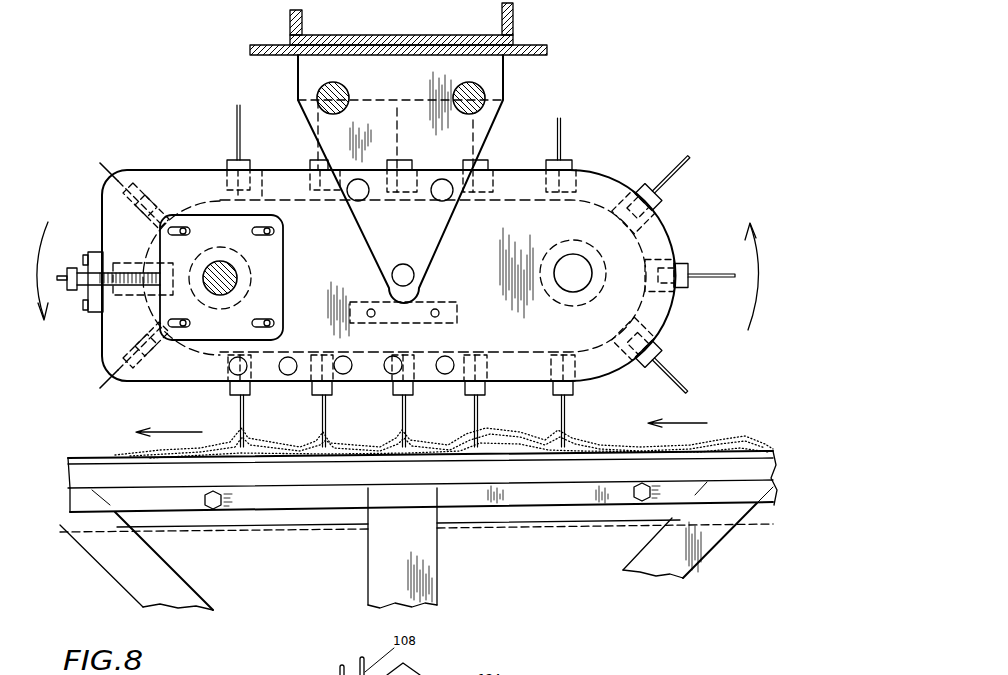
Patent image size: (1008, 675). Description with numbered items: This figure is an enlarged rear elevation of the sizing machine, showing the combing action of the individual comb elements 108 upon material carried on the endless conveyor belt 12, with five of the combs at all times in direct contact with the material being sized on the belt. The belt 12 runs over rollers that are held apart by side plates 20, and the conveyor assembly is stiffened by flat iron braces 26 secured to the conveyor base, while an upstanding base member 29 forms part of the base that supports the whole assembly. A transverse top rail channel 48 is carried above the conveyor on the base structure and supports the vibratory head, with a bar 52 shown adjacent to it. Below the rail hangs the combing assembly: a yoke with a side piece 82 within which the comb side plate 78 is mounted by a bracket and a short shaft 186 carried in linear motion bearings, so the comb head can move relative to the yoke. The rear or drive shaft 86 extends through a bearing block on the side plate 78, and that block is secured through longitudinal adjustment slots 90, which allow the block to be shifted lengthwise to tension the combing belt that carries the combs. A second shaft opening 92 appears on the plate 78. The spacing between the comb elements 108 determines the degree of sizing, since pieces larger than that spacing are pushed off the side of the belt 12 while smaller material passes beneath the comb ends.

The endless conveyor belt 12 is at (720, 449).
The side plates 20 is at (580, 492).
The flat iron braces 26 is at (678, 543).
The upstanding base member 29 is at (400, 550).
The transverse top rail channel 48 is at (508, 21).
The support bar 52 is at (548, 47).
The comb side plate 78 is at (486, 264).
The yoke side piece 82 is at (486, 91).
The rear or drive shaft 86 is at (225, 278).
The longitudinal adjustment slots 90 is at (275, 231).
The output shaft opening 92 is at (571, 271).
The comb elements 108 is at (677, 175).
The short shaft 186 is at (318, 93).